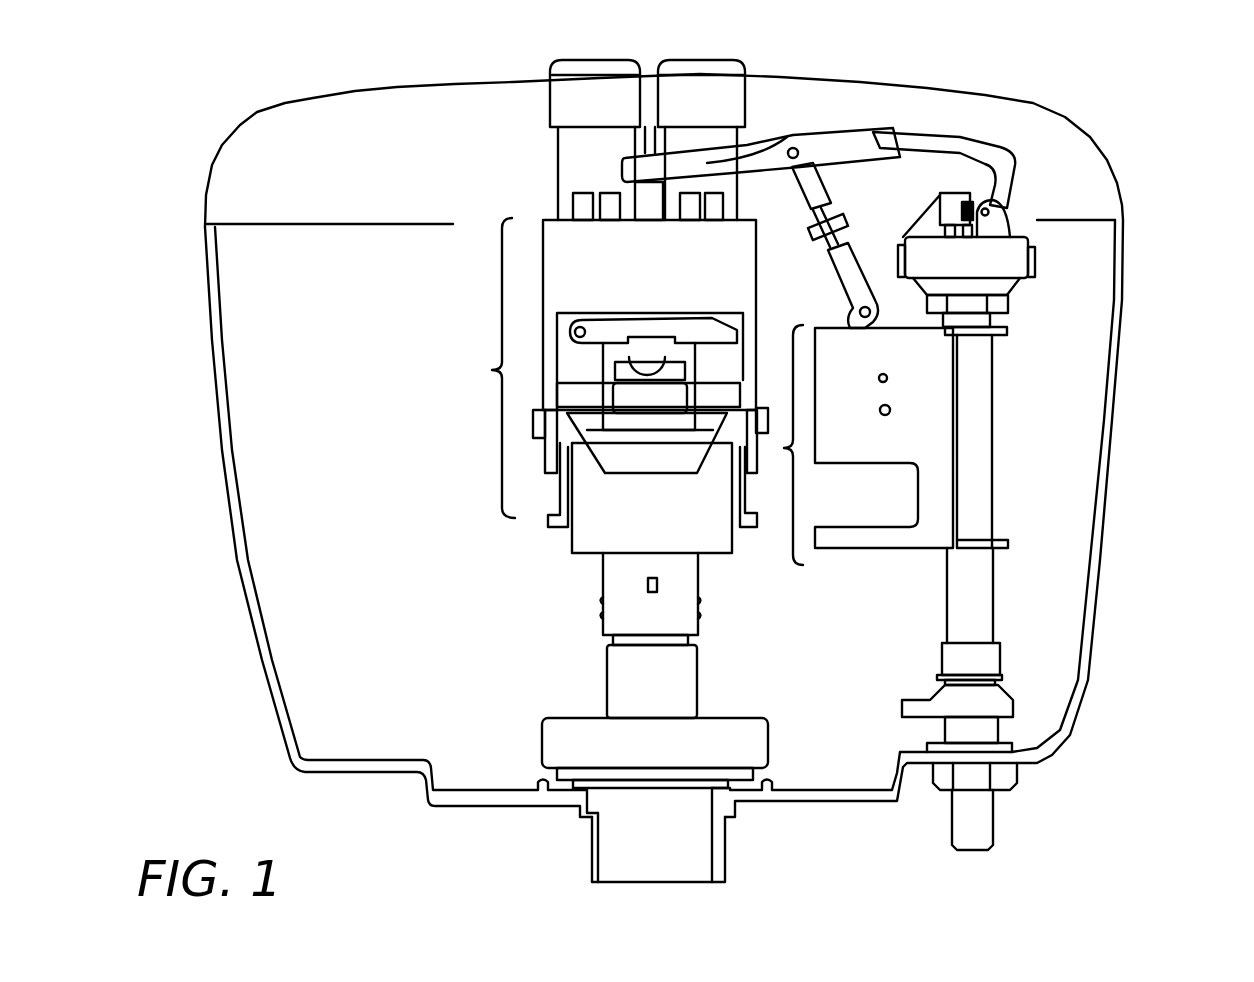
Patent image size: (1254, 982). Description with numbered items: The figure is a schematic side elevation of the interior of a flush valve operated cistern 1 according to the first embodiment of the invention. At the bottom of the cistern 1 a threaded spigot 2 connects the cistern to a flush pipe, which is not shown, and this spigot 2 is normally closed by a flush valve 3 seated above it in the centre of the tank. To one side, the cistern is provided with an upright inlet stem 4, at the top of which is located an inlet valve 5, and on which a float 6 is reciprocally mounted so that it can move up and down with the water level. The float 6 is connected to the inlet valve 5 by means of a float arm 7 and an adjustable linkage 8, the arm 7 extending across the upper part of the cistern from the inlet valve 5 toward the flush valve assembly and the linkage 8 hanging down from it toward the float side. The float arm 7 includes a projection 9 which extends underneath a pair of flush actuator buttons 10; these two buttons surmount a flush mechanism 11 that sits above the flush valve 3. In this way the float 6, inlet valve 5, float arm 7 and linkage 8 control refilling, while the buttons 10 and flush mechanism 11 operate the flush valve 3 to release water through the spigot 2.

The cistern 1 is at (1113, 490).
The threaded spigot 2 is at (730, 847).
The flush valve 3 is at (737, 740).
The inlet stem 4 is at (980, 597).
The inlet valve 5 is at (1010, 262).
The float 6 is at (783, 448).
The float arm 7 is at (862, 147).
The adjustable linkage 8 is at (847, 263).
The projection 9 is at (740, 150).
The flush actuator buttons 10 is at (577, 97).
The flush mechanism 11 is at (490, 370).